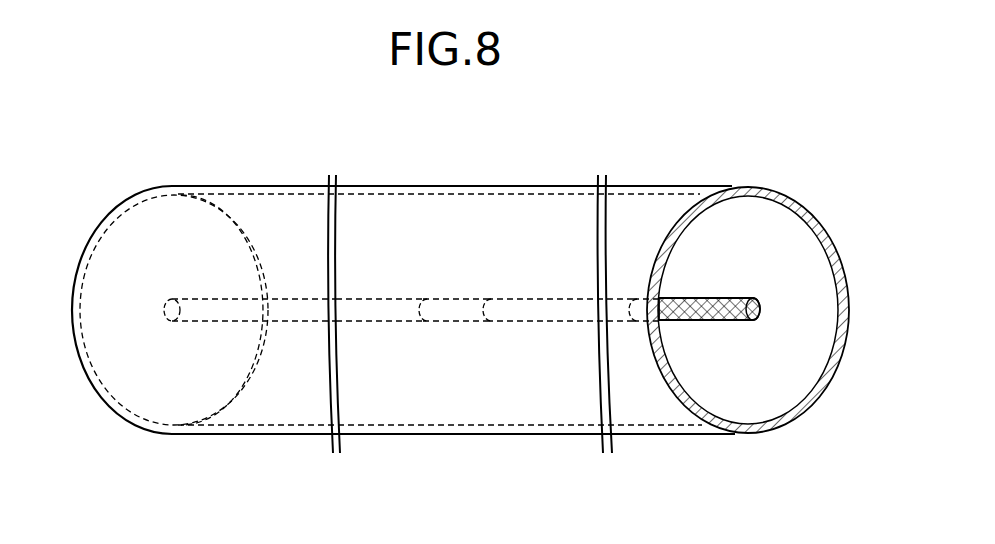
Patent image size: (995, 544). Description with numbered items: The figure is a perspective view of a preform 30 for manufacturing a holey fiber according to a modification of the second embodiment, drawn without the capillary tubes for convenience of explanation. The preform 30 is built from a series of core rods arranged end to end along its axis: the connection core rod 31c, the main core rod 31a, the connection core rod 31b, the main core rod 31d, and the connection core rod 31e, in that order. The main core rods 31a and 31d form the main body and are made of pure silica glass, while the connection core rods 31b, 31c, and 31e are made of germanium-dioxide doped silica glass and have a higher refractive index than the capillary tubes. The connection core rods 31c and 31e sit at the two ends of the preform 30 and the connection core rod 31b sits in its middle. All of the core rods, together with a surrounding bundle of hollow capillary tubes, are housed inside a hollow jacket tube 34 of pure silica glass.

The preform 30 is at (673, 160).
The jacket tube 34 is at (813, 212).
The main core rod 31a is at (550, 321).
The connection core rod 31b is at (460, 321).
The connection core rod 31c is at (730, 321).
The main core rod 31d is at (373, 321).
The connection core rod 31e is at (198, 321).